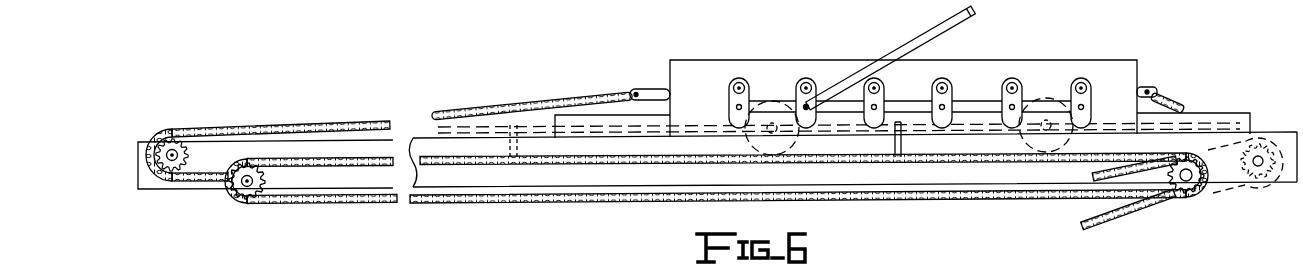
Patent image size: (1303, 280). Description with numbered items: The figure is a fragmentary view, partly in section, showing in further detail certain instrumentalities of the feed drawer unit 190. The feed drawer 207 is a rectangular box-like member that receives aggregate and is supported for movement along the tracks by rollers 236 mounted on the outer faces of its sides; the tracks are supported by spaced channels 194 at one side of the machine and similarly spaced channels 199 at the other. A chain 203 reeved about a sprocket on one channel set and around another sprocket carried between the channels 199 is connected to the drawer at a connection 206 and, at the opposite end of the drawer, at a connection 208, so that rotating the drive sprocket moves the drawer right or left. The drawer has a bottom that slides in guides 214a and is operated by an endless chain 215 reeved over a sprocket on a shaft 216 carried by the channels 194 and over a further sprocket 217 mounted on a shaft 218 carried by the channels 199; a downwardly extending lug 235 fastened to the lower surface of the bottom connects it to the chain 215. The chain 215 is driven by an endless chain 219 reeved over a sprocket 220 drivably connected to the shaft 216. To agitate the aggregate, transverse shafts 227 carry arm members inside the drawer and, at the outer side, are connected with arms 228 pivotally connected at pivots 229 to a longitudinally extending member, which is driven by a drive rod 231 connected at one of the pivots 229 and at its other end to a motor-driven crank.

The feed drawer unit 190 is at (989, 52).
The channels 194 is at (1285, 182).
The channels 199 is at (153, 188).
The chain 203 is at (549, 97).
The connection 206 is at (648, 88).
The feed drawer 207 is at (1058, 62).
The connection 208 is at (1146, 86).
The guides 214a is at (618, 114).
The chain 215 is at (953, 163).
The shaft 216 is at (1190, 170).
The sprocket 217 is at (268, 170).
The shaft 218 is at (244, 175).
The endless chain 219 is at (1112, 222).
The sprocket 220 is at (1174, 191).
The shafts 227 is at (744, 81).
The arms 228 is at (728, 82).
The pivots 229 is at (731, 106).
The drive rod 231 is at (921, 36).
The lug 235 is at (906, 150).
The rollers 236 is at (747, 151).